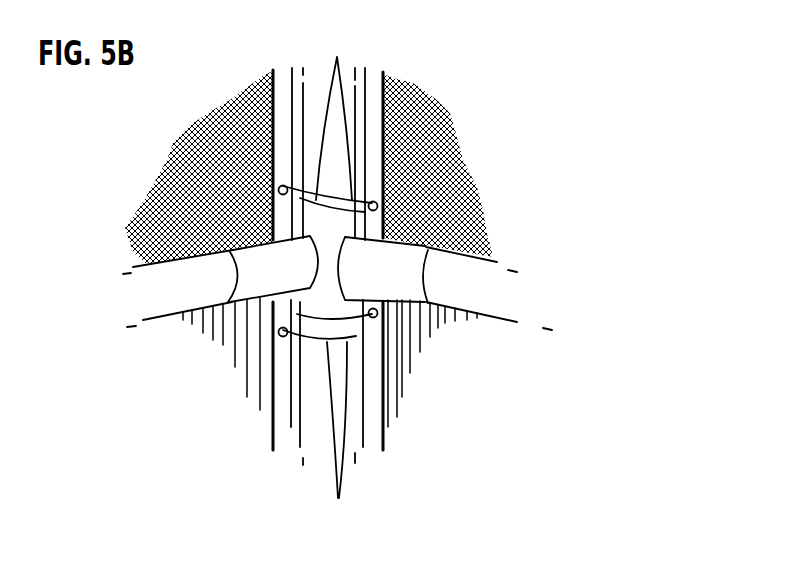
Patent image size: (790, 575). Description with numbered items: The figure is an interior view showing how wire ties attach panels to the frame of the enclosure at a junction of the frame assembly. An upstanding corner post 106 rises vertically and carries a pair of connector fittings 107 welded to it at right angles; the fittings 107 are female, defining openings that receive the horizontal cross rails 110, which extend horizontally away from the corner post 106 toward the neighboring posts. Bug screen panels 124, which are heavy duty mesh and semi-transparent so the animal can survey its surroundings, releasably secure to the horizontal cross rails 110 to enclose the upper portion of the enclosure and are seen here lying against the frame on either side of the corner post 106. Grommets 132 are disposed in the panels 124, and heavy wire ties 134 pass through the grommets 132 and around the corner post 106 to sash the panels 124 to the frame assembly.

The upstanding corner post 106 is at (318, 423).
The connector fitting 107 is at (253, 270).
The horizontal cross rail 110 is at (477, 283).
The bug screen panel 124 is at (231, 218).
The grommet 132 is at (280, 186).
The heavy wire tie 134 is at (336, 282).